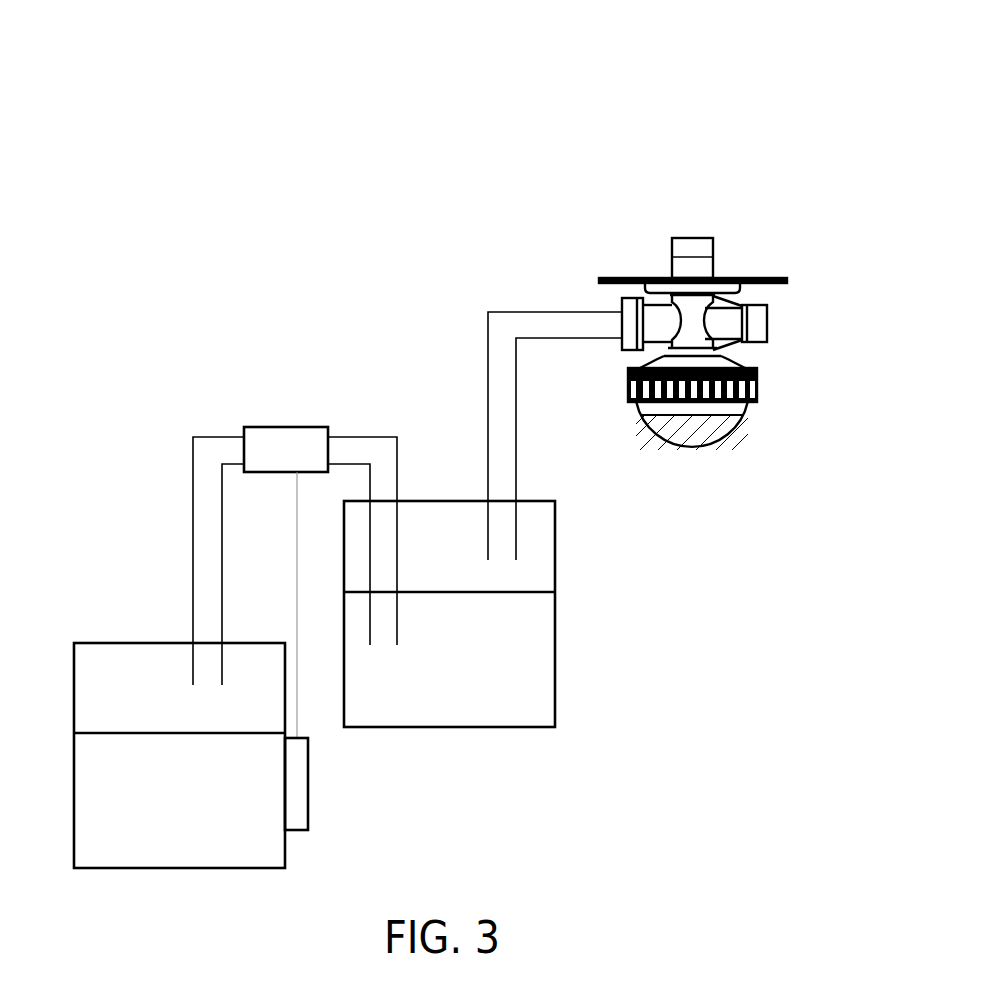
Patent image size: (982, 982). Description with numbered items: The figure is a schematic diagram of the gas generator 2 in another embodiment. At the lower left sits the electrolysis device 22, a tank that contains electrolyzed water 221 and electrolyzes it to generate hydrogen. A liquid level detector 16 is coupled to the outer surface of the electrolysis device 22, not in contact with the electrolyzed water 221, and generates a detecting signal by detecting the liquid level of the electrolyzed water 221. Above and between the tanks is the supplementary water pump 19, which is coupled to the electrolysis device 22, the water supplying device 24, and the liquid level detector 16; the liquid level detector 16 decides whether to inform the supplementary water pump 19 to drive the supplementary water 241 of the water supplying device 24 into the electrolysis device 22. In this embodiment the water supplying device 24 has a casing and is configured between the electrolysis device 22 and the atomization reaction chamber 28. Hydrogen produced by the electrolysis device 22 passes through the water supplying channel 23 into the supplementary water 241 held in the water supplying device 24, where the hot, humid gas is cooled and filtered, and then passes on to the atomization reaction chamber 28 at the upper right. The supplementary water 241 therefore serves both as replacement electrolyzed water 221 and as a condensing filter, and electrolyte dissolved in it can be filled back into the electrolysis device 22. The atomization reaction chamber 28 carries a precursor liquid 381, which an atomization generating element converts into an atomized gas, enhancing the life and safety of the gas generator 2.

The gas generator 2 is at (434, 118).
The atomization reaction chamber 28 is at (713, 252).
The precursor liquid 381 is at (718, 430).
The supplementary water pump 19 is at (288, 438).
The water supplying channel 23 is at (192, 488).
The electrolysis device 22 is at (111, 645).
The electrolyzed water 221 is at (219, 845).
The liquid level detector 16 is at (308, 778).
The water supplying device 24 is at (555, 533).
The supplementary water 241 is at (438, 707).